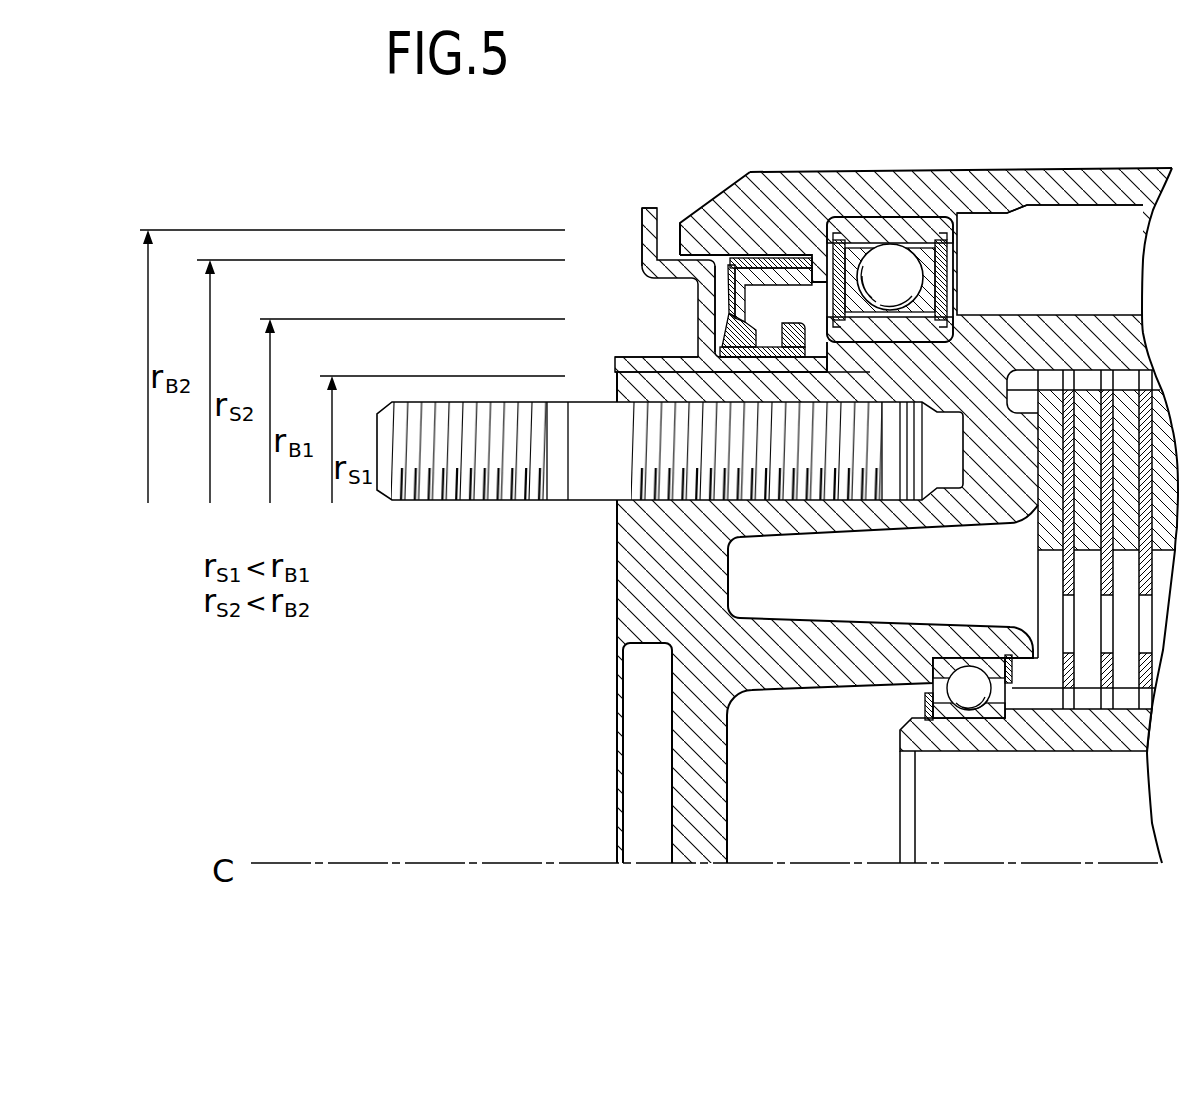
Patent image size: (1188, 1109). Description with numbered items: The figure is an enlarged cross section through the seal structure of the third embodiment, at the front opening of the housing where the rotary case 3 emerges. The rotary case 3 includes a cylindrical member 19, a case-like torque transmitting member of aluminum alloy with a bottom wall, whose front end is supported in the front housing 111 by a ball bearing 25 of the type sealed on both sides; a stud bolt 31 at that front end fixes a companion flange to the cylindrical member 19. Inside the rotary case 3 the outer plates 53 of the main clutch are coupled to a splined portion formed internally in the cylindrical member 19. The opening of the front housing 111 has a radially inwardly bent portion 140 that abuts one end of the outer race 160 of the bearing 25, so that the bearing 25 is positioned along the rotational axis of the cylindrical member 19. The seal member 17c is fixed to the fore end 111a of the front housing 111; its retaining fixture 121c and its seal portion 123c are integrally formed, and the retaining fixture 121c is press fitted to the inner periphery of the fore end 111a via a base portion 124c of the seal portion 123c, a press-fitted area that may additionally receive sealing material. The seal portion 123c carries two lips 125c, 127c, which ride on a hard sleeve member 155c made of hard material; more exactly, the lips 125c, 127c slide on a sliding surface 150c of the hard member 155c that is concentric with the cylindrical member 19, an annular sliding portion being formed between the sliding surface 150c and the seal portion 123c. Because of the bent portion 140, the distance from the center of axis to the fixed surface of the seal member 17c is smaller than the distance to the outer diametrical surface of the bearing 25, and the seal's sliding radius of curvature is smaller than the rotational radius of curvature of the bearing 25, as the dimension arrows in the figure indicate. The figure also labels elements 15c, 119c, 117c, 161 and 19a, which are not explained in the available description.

The front housing 111 is at (1133, 166).
The fore end of the front housing 111a is at (718, 210).
The seal holder 15c is at (633, 221).
The outer cylindrical portion 119c is at (651, 206).
The base portion 124c is at (745, 217).
The retaining fixture 121c is at (780, 258).
The bent portion 140 is at (777, 274).
The outer race 160 is at (872, 217).
The ball bearing 25 is at (900, 262).
The seal member 17c is at (627, 254).
The rotary case 3 is at (1106, 306).
The recess 161 is at (927, 330).
The cylindrical portion 117c is at (718, 297).
The seal portion 123c is at (727, 318).
The sliding surface 150c is at (818, 382).
The hub end face 19a is at (660, 531).
The stud bolt 31 is at (466, 490).
The cylindrical member 19 is at (600, 600).
The lip 125c is at (728, 358).
The hard sleeve member 155c is at (851, 380).
The lip 127c is at (810, 378).
The outer plates 53 is at (999, 398).